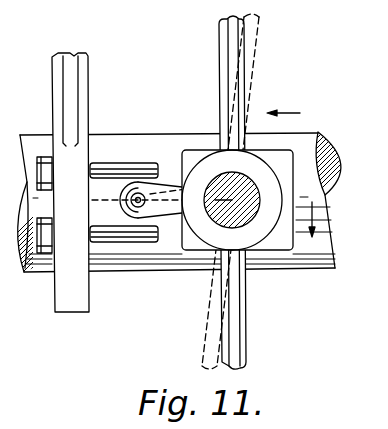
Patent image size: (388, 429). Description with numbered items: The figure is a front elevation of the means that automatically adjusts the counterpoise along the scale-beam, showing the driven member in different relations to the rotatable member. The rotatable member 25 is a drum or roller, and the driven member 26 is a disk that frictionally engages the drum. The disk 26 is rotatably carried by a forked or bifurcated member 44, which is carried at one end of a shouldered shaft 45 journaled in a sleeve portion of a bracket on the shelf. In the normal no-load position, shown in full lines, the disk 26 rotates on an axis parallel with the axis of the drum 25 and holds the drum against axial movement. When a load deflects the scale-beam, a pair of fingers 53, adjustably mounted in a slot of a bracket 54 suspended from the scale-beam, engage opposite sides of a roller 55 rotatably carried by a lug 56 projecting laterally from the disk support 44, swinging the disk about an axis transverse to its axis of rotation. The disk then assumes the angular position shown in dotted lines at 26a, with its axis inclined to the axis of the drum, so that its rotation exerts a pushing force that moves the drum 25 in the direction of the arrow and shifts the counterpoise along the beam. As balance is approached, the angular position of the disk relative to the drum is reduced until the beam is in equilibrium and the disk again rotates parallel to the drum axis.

The rotatable member 25 is at (308, 168).
The driven member 26 is at (236, 348).
The disk in angular position 26a is at (200, 348).
The forked member 44 is at (257, 233).
The shouldered shaft 45 is at (237, 193).
The fingers 53 is at (101, 223).
The bracket 54 is at (70, 182).
The roller 55 is at (132, 221).
The lug 56 is at (172, 213).